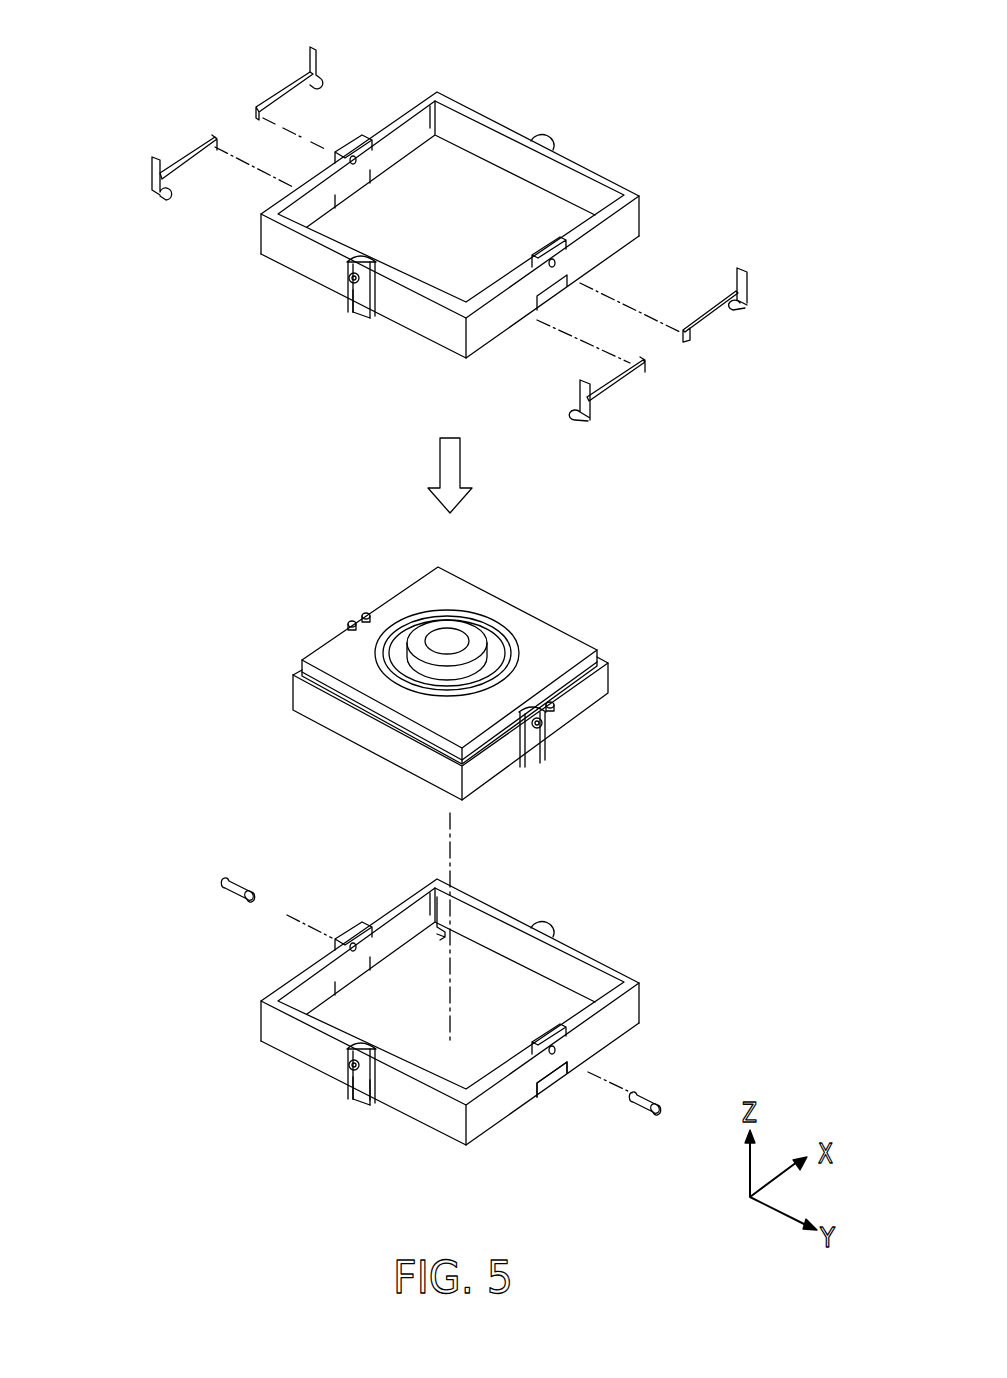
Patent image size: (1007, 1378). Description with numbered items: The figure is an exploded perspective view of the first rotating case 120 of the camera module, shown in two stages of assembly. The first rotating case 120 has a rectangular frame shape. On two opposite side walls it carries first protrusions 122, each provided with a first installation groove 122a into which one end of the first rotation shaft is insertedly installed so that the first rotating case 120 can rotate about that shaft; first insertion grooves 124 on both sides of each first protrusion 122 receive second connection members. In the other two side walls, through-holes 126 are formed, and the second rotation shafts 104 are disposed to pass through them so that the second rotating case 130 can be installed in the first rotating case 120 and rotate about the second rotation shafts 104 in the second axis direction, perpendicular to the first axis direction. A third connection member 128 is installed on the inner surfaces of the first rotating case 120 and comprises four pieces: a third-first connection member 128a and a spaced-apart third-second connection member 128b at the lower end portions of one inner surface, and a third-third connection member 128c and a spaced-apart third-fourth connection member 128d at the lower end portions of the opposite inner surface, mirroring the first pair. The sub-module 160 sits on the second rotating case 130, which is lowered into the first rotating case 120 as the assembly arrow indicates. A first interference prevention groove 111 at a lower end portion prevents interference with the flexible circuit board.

The second rotation shaft 104 is at (240, 878).
The first interference prevention groove 111 is at (553, 1087).
The first rotating case 120 is at (602, 180).
The first protrusion 122 is at (346, 262).
The first installation groove 122a is at (355, 300).
The first insertion groove 124 is at (368, 1092).
The through-hole 126 is at (354, 156).
The third connection member 128 is at (447, 259).
The 3-1 connection member 128a is at (275, 93).
The 3-2 connection member 128b is at (190, 151).
The 3-3 connection member 128c is at (715, 322).
The 3-4 connection member 128d is at (617, 391).
The second rotating case 130 is at (600, 680).
The sub-module 160 is at (560, 647).